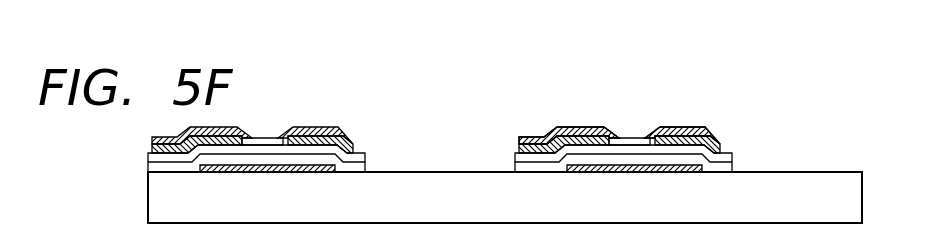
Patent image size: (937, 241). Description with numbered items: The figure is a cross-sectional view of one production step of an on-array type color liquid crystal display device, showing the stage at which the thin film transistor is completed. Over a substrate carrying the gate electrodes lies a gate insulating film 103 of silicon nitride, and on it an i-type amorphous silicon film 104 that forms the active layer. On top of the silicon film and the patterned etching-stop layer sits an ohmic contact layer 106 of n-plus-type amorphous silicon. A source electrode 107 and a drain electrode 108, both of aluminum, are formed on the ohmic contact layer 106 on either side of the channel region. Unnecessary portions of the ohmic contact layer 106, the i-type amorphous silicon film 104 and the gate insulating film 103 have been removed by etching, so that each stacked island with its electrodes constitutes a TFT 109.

The gate insulating film 103 is at (515, 157).
The i-type amorphous silicon film 104 is at (733, 153).
The ohmic contact layer 106 is at (718, 133).
The source electrode 107 is at (574, 130).
The drain electrode 108 is at (688, 127).
The TFT 109 is at (720, 84).